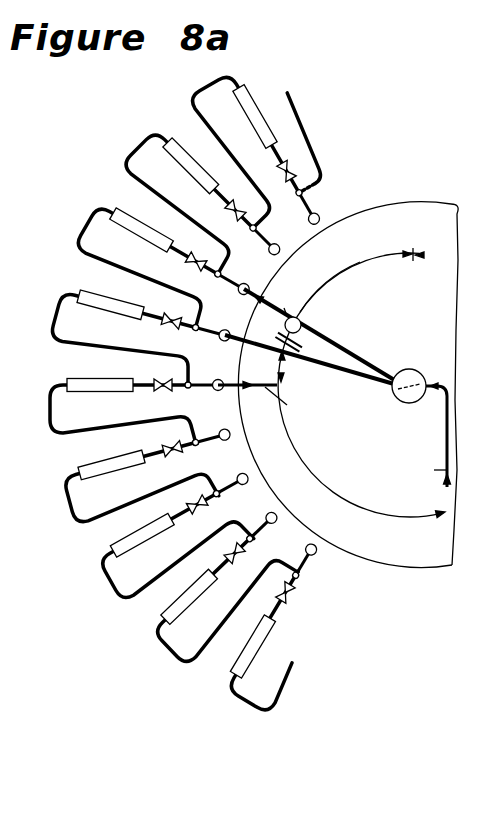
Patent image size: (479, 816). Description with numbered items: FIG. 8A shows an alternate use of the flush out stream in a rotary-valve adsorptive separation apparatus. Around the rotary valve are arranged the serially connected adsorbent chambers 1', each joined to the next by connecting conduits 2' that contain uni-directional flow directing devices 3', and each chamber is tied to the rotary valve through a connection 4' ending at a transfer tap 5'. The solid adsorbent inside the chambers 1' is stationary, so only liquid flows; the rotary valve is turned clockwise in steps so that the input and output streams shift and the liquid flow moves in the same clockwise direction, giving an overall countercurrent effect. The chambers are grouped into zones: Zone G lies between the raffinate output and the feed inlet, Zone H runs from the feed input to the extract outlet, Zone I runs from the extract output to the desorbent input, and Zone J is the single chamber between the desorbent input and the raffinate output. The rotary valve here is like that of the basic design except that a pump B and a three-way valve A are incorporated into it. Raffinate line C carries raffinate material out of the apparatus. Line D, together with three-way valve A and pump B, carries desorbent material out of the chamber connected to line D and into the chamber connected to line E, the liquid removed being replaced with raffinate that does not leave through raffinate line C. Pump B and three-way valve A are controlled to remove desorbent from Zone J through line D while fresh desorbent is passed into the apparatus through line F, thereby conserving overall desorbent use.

The adsorbent chamber 1' is at (186, 381).
The connecting conduit 2' is at (173, 393).
The uni-directional flow directing device 3' is at (209, 381).
The port connecting line 4' is at (254, 401).
The transfer tap 5' is at (253, 384).
The three-way valve A is at (414, 369).
The pump B is at (302, 318).
The raffinate line C is at (261, 384).
The line (desorbent line) D is at (268, 343).
The line E is at (261, 299).
The line F is at (446, 420).
The Zone G is at (348, 385).
The Zone H is at (456, 260).
The Zone I is at (330, 285).
The Zone J is at (284, 380).